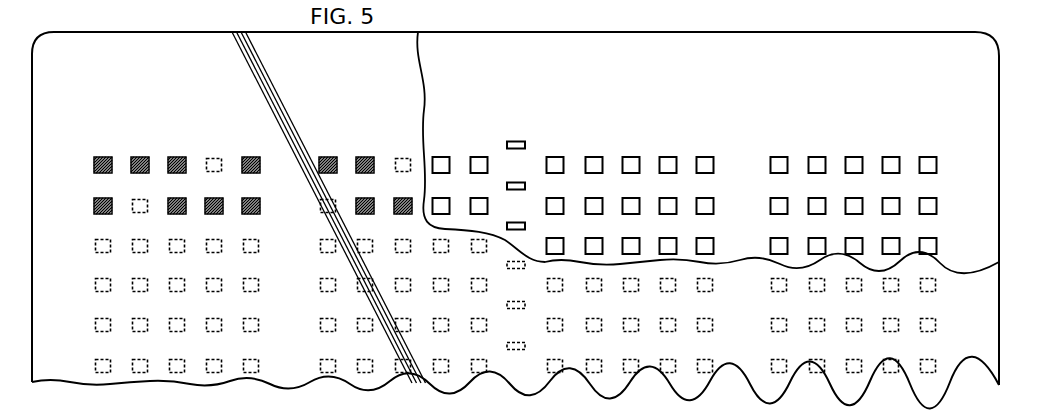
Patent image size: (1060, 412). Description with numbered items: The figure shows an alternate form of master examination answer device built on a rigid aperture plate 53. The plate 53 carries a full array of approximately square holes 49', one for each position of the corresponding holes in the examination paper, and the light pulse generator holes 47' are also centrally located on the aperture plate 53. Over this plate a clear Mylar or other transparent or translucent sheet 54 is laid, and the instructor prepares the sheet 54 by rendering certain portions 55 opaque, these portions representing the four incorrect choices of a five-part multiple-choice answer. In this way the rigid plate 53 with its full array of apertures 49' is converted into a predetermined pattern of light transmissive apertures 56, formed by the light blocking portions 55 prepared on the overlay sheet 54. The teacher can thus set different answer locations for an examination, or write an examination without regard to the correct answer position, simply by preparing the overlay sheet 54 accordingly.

The light pulse generator holes 47' is at (537, 231).
The approximately square holes 49' is at (685, 190).
The rigid aperture plate 53 is at (990, 70).
The transparent or translucent sheet 54 is at (407, 72).
The opaque portions 55 is at (176, 155).
The light transmissive apertures 56 is at (212, 156).